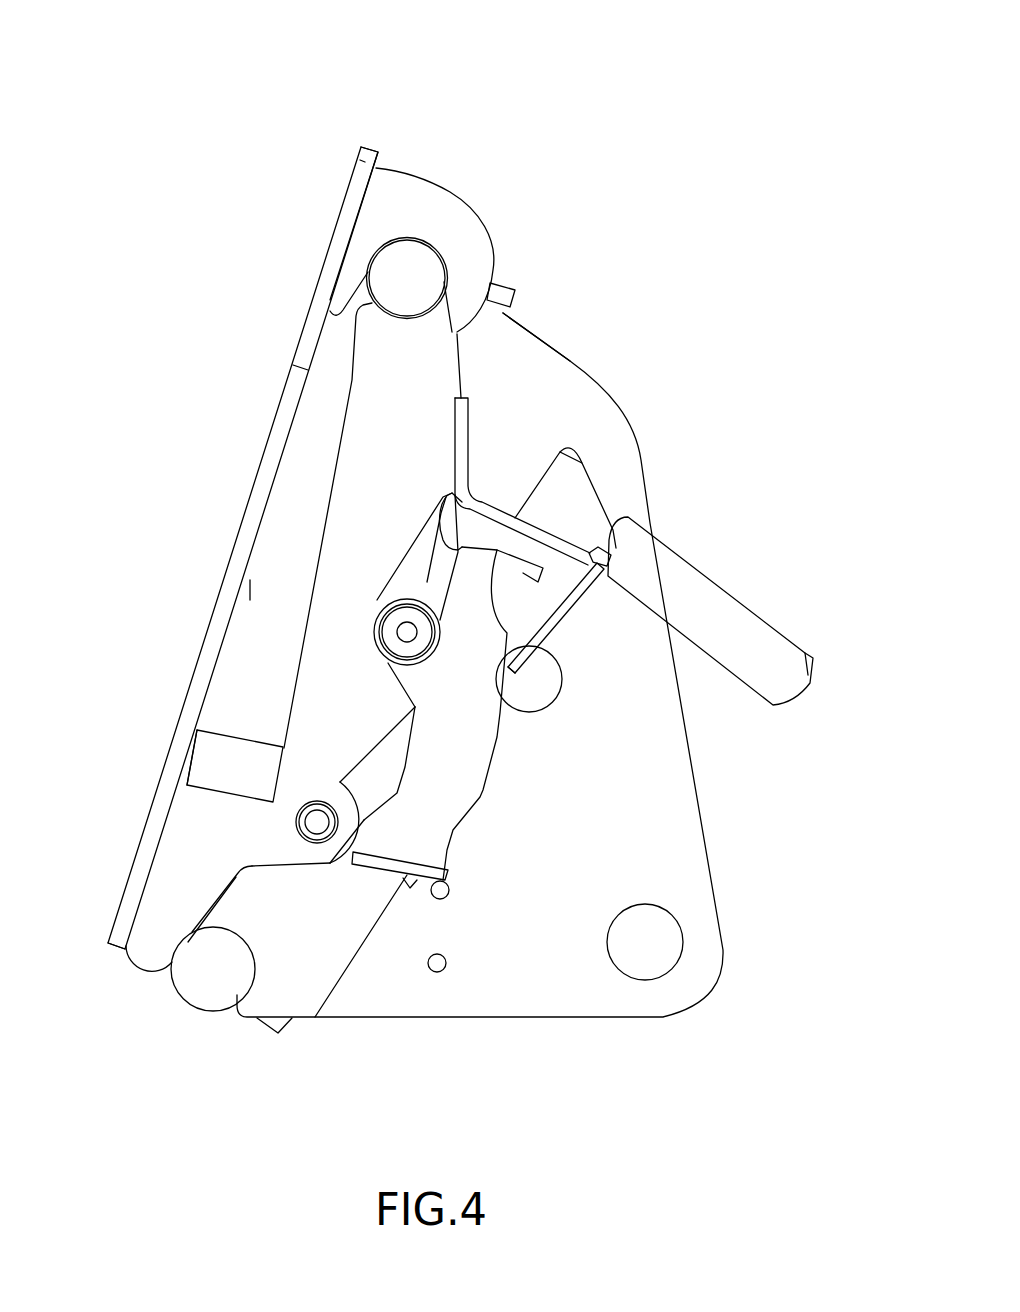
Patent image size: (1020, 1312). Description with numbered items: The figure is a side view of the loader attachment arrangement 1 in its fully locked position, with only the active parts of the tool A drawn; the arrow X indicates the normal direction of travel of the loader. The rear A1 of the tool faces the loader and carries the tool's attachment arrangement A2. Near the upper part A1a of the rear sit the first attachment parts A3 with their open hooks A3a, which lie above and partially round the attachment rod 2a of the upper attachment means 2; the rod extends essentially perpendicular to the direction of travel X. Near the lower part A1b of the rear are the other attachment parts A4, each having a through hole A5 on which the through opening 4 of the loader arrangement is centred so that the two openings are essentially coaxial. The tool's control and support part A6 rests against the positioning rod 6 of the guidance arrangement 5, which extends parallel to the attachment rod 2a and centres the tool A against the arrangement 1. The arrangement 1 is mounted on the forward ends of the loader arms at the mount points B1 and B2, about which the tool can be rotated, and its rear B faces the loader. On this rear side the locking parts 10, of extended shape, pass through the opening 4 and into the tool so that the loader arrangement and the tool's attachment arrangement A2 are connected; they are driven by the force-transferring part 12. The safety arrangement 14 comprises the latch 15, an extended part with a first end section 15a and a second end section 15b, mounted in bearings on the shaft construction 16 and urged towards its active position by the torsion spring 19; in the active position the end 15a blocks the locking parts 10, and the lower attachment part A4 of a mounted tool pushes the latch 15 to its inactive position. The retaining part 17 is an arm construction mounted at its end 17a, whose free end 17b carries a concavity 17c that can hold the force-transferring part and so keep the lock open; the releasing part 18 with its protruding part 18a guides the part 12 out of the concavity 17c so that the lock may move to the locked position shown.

The attachment arrangement 1 is at (653, 170).
The upper attachment means 2 is at (530, 312).
The attachment rod 2a is at (412, 273).
The through opening 4 is at (303, 800).
The guidance arrangement 5 is at (253, 1035).
The positioning rod 6 is at (217, 973).
The locking part 10 is at (317, 818).
The force-transferring part 12 is at (518, 600).
The safety arrangement 14 is at (360, 705).
The latch 15 is at (467, 797).
The first end section of latch 15a is at (430, 843).
The second end section of latch 15b is at (477, 573).
The shaft construction 16 is at (407, 632).
The retaining part 17 is at (613, 457).
The mounted end of retaining part 17a is at (460, 445).
The free end of retaining part 17b is at (578, 508).
The concavity 17c is at (607, 570).
The releasing part 18 is at (527, 637).
The protruding part 18a is at (615, 532).
The torsion spring 19 is at (407, 632).
The tool A is at (195, 272).
The rear of the tool A1 is at (257, 547).
The upper part of the rear A1a is at (312, 218).
The lower part of the rear A1b is at (125, 845).
The attachment arrangement of the tool A2 is at (397, 125).
The first attachment part A3 is at (458, 178).
The hook A3a is at (457, 272).
The other attachment part A4 is at (207, 808).
The through hole A5 is at (333, 835).
The control and support part A6 is at (155, 960).
The rear of the attachment arrangement B is at (508, 665).
The mount point B1 is at (657, 952).
The mount point B2 is at (533, 690).
The arrow indicating normal direction of travel X is at (208, 435).